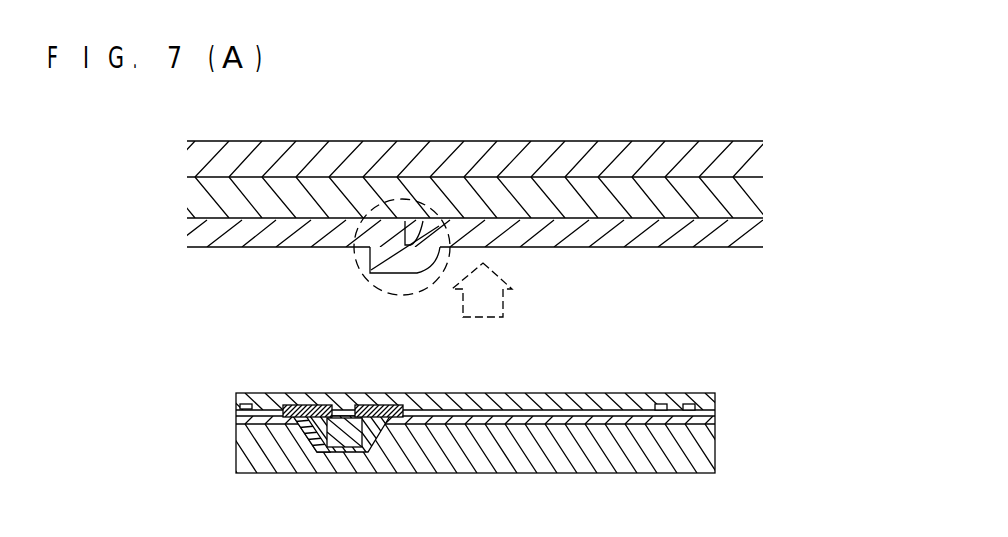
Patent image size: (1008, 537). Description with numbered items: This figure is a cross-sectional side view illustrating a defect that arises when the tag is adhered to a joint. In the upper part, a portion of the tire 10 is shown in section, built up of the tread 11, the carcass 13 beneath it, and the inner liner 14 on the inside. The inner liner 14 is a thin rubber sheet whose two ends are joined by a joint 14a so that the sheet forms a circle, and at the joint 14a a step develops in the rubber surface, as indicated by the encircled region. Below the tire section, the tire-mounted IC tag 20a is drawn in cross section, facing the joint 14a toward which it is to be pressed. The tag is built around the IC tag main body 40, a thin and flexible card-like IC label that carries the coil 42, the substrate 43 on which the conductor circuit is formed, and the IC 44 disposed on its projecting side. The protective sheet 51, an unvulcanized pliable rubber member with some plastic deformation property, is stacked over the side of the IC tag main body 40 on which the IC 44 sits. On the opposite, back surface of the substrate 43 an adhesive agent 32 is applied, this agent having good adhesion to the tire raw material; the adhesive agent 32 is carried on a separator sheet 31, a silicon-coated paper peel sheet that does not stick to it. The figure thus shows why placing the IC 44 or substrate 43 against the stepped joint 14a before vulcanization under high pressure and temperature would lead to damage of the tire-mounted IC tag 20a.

The tire 10 is at (507, 180).
The tread 11 is at (742, 166).
The carcass 13 is at (742, 205).
The inner liner 14 is at (512, 247).
The joint 14a is at (357, 273).
The tire-mounted IC tag 20a is at (518, 394).
The separator sheet 31 is at (708, 393).
The adhesive agent 32 is at (708, 402).
The IC tag main body 40 is at (730, 425).
The coil 42 is at (248, 404).
The substrate 43 is at (307, 404).
The IC 44 is at (342, 405).
The protective sheet 51 is at (708, 452).